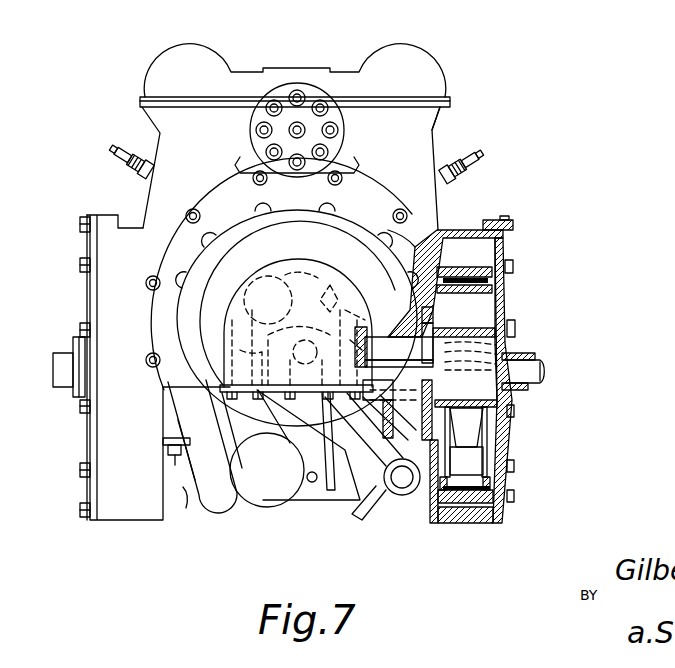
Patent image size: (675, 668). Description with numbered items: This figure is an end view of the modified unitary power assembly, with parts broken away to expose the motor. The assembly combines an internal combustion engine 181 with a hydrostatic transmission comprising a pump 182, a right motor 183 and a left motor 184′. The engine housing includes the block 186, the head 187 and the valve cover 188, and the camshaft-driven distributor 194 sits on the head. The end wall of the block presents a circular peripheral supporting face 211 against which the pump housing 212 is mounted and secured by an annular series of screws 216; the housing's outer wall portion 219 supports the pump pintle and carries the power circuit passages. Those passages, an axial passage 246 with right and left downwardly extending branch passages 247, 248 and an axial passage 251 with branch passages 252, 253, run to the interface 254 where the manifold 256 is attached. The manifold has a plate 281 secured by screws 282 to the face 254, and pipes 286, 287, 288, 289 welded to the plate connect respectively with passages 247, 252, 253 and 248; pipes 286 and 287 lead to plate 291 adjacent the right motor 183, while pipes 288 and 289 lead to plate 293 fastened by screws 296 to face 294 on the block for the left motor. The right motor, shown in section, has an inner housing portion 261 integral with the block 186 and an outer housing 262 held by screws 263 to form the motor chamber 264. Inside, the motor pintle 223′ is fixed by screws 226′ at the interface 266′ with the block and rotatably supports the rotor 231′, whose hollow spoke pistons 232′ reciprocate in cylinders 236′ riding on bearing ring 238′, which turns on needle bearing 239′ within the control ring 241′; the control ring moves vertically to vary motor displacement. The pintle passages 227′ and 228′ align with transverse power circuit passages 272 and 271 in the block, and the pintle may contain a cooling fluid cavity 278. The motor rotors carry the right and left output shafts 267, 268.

The internal combustion engine 181 is at (136, 106).
The pump 182 is at (160, 314).
The right motor 183 is at (513, 500).
The left motor 184′ is at (86, 423).
The engine block 186 is at (445, 205).
The head 187 is at (433, 136).
The valve cover 188 is at (430, 67).
The distributor 194 is at (297, 96).
The circular peripheral supporting face 211 is at (446, 220).
The pump housing 212 is at (218, 212).
The screws 216 is at (400, 208).
The outer wall portion 219 is at (270, 288).
The pintle 223′ is at (545, 365).
The screws 226′ is at (445, 325).
The upper power circuit passage 227′ is at (530, 405).
The lower power circuit passage 228′ is at (535, 347).
The rotor 231′ is at (503, 443).
The pistons 232′ is at (513, 468).
The cylinders 236′ is at (500, 482).
The bearing ring 238′ is at (482, 508).
The needle bearing 239′ is at (462, 506).
The control ring 241′ is at (458, 432).
The axial passage 246 is at (288, 277).
The right branch passage 247 is at (333, 295).
The left branch passage 248 is at (238, 315).
The axial passage 251 is at (307, 348).
The right branch passage 252 is at (380, 300).
The left branch passage 253 is at (240, 348).
The interface 254 is at (162, 390).
The manifold 256 is at (214, 512).
The inner housing portion 261 is at (118, 214).
The outer housing 262 is at (85, 245).
The screws 263 is at (83, 271).
The motor chamber 264 is at (520, 312).
The interface 266′ is at (515, 420).
The right output shaft 267 is at (548, 376).
The left output shaft 268 is at (58, 378).
The transverse power circuit passage 271 is at (422, 345).
The transverse power circuit passage 272 is at (337, 445).
The cooling fluid cavity 278 is at (515, 333).
The plate 281 is at (297, 402).
The screws 282 is at (302, 480).
The pipe 286 is at (373, 500).
The pipe 287 is at (360, 473).
The pipe 288 is at (222, 502).
The pipe 289 is at (186, 508).
The plate 291 is at (398, 496).
The plate 293 is at (168, 450).
The face 294 is at (183, 437).
The screws 296 is at (176, 458).